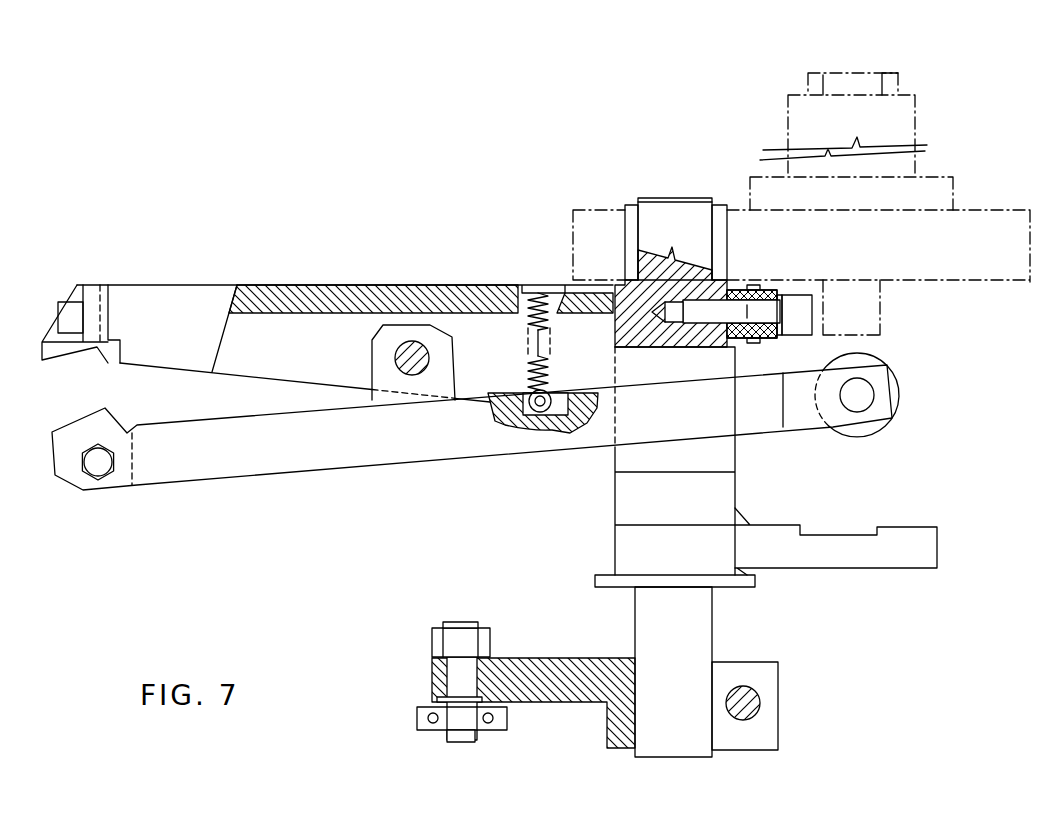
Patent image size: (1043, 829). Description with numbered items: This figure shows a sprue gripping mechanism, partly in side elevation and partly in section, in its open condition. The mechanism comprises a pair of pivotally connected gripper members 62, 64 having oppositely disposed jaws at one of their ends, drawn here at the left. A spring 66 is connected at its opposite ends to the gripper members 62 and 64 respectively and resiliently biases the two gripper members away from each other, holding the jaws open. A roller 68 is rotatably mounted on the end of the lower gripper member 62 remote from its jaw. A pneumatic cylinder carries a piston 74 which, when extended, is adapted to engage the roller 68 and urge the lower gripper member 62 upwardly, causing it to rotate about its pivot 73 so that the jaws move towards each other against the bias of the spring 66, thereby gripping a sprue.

The lower gripper member 62 is at (212, 458).
The gripper member 64 is at (163, 290).
The spring 66 is at (530, 371).
The roller 68 is at (895, 380).
The pivot 73 is at (405, 378).
The piston 74 is at (863, 312).